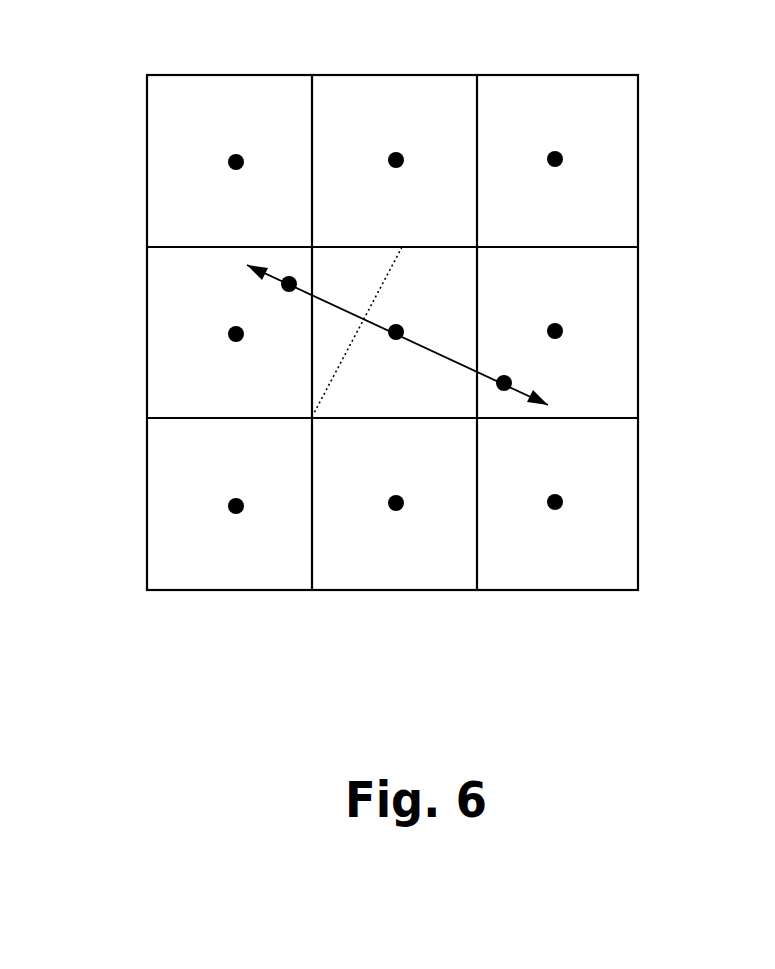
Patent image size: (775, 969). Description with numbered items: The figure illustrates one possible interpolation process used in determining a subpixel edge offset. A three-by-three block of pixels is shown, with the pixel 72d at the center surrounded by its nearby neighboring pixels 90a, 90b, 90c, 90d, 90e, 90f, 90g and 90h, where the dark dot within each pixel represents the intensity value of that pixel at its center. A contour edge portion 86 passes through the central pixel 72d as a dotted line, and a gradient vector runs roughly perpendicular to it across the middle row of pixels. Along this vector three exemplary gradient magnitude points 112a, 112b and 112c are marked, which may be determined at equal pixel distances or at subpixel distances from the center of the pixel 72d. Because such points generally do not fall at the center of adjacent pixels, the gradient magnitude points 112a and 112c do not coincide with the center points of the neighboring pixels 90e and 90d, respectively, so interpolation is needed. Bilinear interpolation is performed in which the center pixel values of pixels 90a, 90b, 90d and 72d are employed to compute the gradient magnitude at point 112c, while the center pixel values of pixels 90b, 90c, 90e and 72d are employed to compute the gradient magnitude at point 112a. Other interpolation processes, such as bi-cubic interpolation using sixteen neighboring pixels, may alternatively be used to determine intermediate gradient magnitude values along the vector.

The neighboring pixel 90a is at (228, 75).
The neighboring pixel 90b is at (407, 75).
The neighboring pixel 90c is at (558, 74).
The neighboring pixel 90d is at (147, 338).
The neighboring pixel 90e is at (639, 338).
The neighboring pixel 90f is at (227, 590).
The neighboring pixel 90g is at (395, 590).
The neighboring pixel 90h is at (553, 590).
The pixel 72d is at (462, 295).
The contour edge portion 86 is at (364, 388).
The gradient magnitude point 112a is at (510, 380).
The gradient magnitude point 112b is at (403, 329).
The gradient magnitude point 112c is at (291, 280).